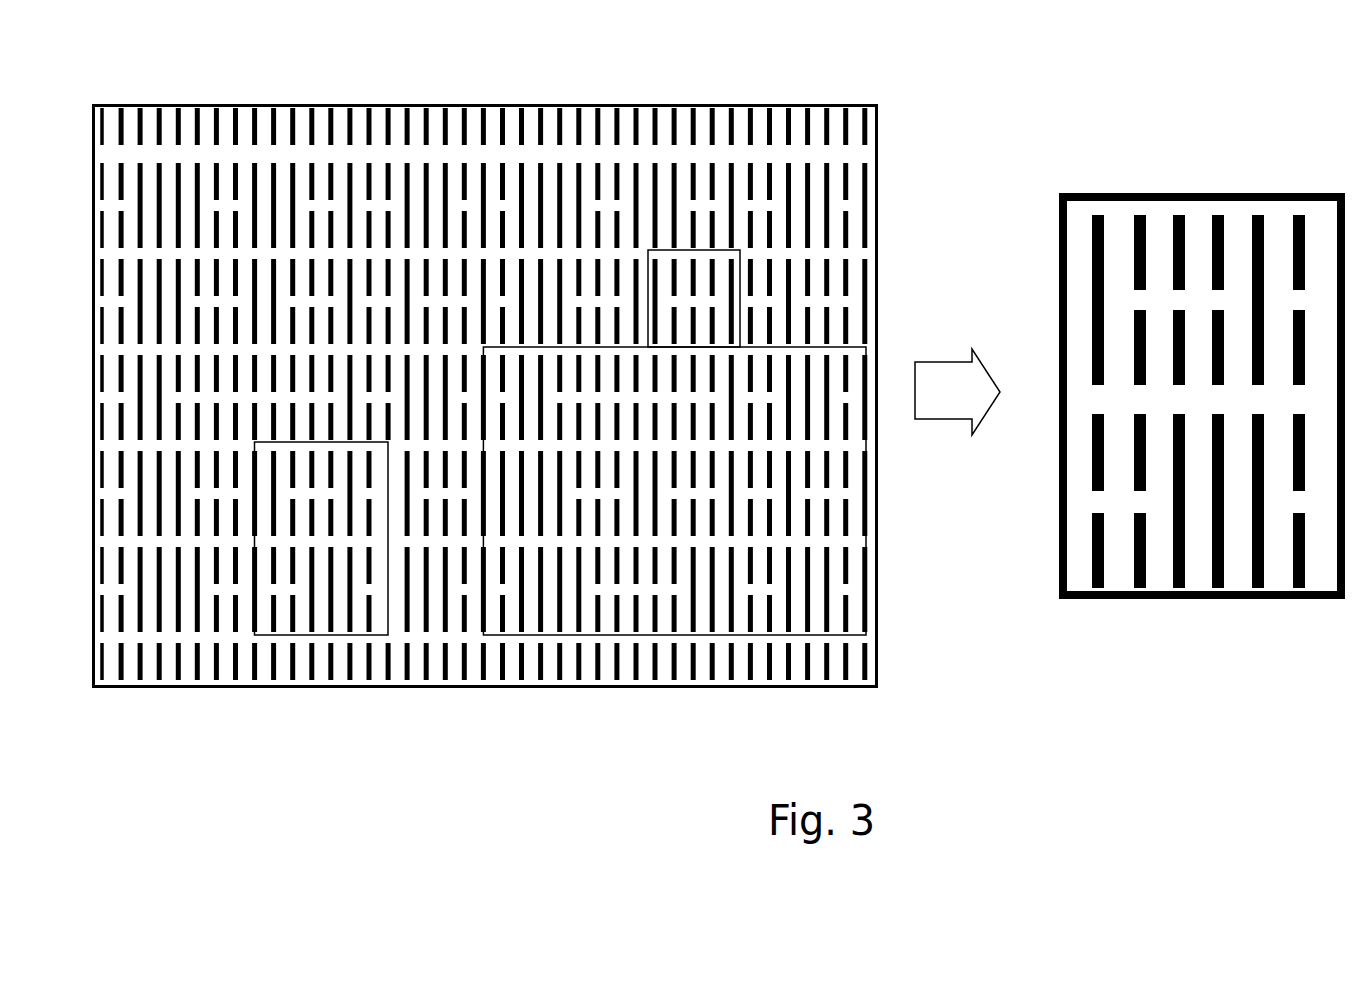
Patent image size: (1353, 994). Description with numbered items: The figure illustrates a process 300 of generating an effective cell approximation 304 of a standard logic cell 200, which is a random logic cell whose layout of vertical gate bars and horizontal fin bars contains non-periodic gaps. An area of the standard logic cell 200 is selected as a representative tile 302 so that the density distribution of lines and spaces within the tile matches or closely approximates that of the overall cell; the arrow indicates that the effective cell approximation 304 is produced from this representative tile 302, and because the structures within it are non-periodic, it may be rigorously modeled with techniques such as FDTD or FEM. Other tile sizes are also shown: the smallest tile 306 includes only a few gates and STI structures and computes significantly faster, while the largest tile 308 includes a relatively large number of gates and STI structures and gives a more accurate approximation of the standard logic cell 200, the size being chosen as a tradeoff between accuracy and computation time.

The standard logic cell 200 is at (530, 399).
The process 300 is at (1125, 73).
The representative tile 302 is at (337, 636).
The effective cell approximation 304 is at (1230, 194).
The smallest tile 306 is at (738, 262).
The largest tile 308 is at (840, 636).